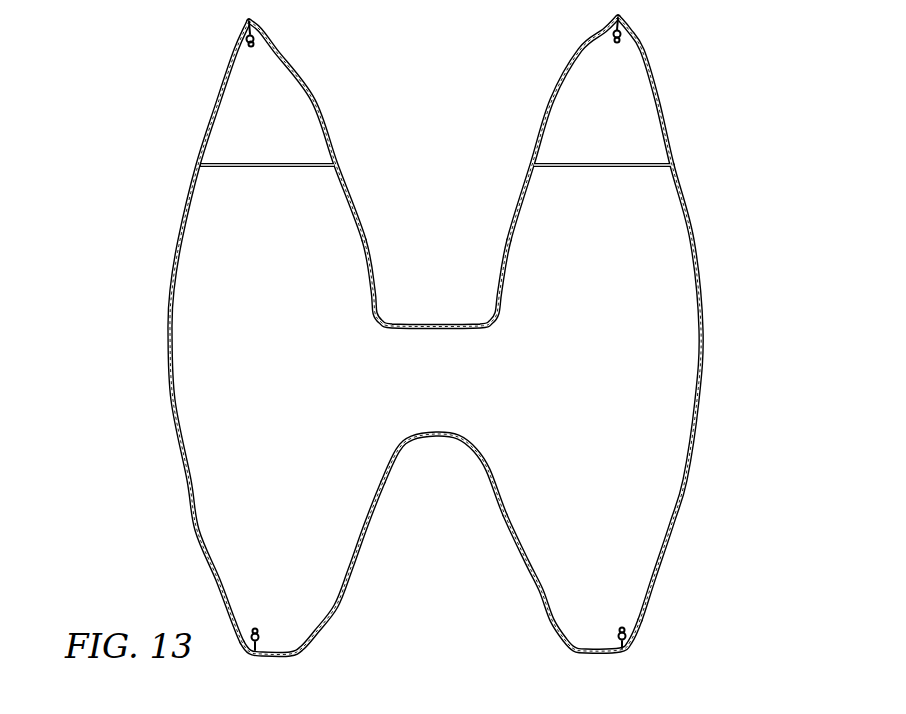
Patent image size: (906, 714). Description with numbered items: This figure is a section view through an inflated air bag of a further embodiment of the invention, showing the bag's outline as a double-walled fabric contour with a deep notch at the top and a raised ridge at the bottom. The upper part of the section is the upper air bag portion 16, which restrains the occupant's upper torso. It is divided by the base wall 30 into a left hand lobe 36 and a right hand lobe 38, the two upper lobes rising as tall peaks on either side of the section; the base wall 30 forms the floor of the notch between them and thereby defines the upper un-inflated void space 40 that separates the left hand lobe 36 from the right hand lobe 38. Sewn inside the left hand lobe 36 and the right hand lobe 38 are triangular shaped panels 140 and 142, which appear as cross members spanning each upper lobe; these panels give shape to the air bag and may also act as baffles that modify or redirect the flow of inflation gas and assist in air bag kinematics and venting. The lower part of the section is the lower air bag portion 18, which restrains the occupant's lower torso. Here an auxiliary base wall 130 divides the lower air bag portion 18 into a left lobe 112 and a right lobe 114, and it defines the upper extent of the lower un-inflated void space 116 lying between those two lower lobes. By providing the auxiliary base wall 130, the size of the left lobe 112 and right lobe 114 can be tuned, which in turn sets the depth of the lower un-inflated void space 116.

The upper air bag portion 16 is at (686, 103).
The lower air bag portion 18 is at (690, 510).
The base wall 30 is at (435, 324).
The left hand lobe 36 is at (218, 213).
The right hand lobe 38 is at (648, 218).
The upper un-inflated void space 40 is at (463, 157).
The left lobe 112 is at (218, 522).
The right lobe 114 is at (628, 540).
The lower un-inflated void space 116 is at (462, 555).
The auxiliary base wall 130 is at (440, 433).
The triangular shaped panel 140 is at (268, 128).
The triangular shaped panel 142 is at (607, 120).